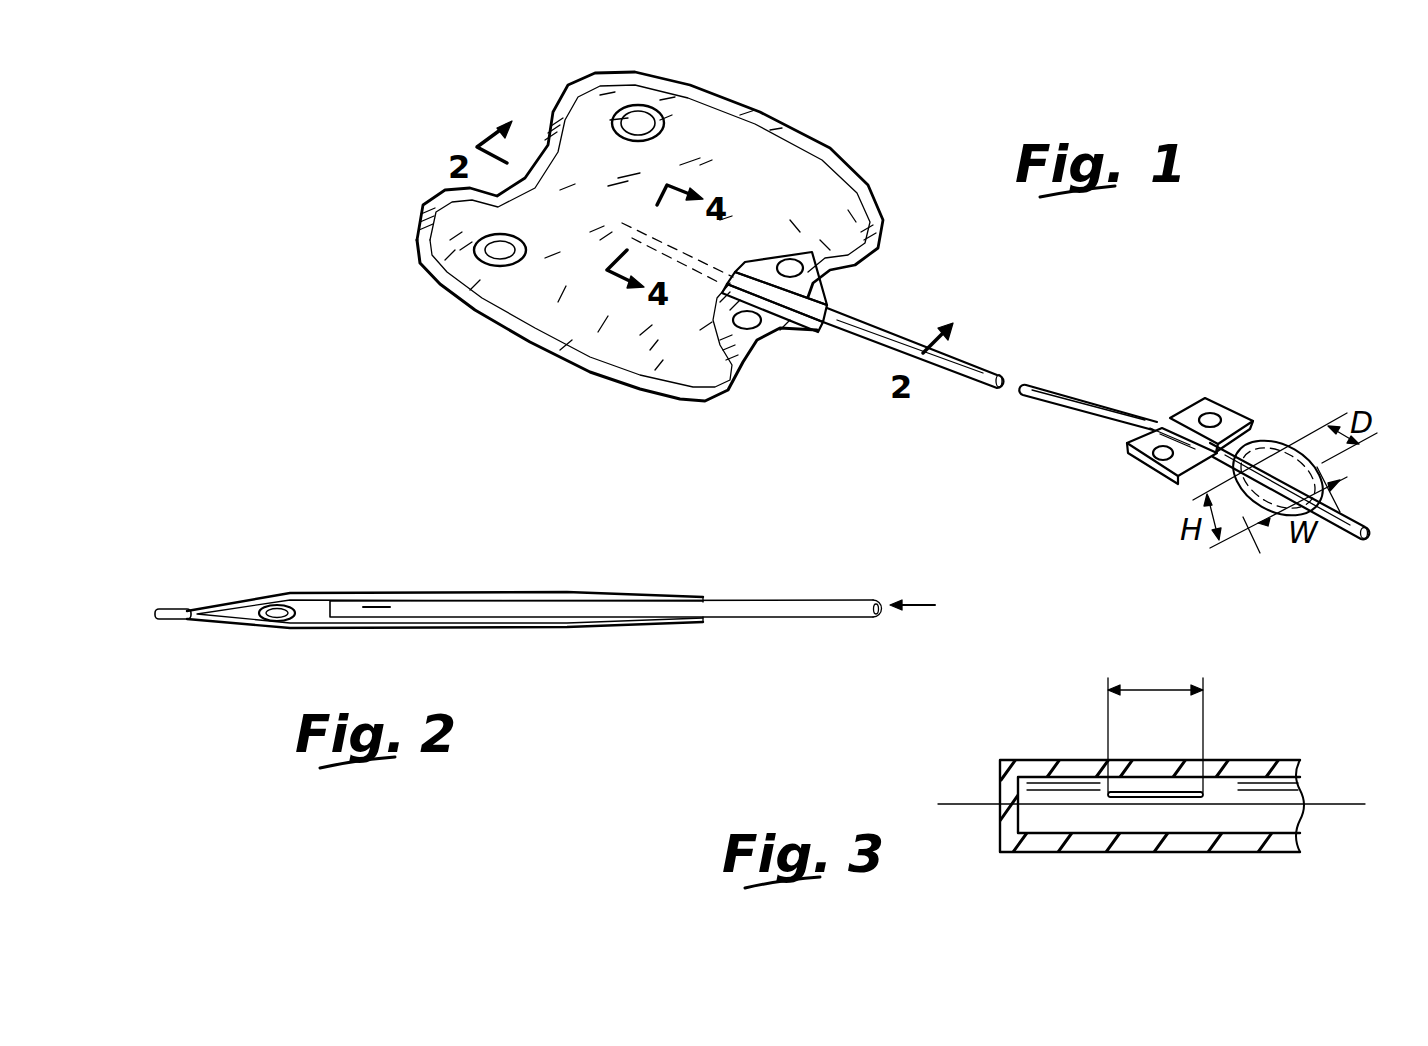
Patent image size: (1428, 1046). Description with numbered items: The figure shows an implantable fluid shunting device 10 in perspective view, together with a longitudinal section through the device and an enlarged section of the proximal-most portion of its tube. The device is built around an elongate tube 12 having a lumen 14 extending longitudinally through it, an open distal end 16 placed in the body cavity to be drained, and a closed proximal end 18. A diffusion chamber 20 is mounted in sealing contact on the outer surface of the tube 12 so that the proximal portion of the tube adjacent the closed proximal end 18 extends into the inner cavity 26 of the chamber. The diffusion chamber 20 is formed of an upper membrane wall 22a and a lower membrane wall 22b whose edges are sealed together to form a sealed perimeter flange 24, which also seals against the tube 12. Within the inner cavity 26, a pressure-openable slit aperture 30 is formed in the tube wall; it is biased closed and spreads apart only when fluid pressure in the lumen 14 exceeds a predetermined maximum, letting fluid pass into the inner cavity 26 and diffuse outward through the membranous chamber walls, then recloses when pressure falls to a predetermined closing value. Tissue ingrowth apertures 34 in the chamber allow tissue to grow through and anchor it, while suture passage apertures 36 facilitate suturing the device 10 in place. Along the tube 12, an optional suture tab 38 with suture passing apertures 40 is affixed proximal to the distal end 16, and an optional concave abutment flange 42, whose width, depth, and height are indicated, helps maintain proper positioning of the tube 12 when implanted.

In FIG. 1, the implantable fluid shunting device 10 is at (848, 125).
In FIG. 1, the elongate tube 12 is at (1085, 393).
In FIG. 1, the lumen 14 is at (1012, 372).
In FIG. 3, the lumen 14 is at (1250, 800).
In FIG. 1, the open distal end 16 is at (1412, 568).
In FIG. 1, the closed proximal end 18 is at (627, 212).
In FIG. 2, the closed proximal end 18 is at (322, 603).
In FIG. 3, the closed proximal end 18 is at (1000, 812).
In FIG. 1, the diffusion chamber 20 is at (833, 210).
In FIG. 2, the diffusion chamber 20 is at (224, 601).
In FIG. 2, the upper membrane wall 22a is at (580, 593).
In FIG. 2, the lower membrane wall 22b is at (548, 627).
In FIG. 1, the sealed perimeter flange 24 is at (632, 110).
In FIG. 2, the sealed perimeter flange 24 is at (172, 618).
In FIG. 2, the inner cavity 26 is at (432, 598).
In FIG. 1, the pressure-openable slit aperture 30 is at (627, 213).
In FIG. 2, the pressure-openable slit aperture 30 is at (373, 605).
In FIG. 3, the pressure-openable slit aperture 30 is at (1165, 790).
In FIG. 1, the tissue ingrowth apertures 34 is at (640, 125).
In FIG. 2, the tissue ingrowth apertures 34 is at (278, 610).
In FIG. 1, the suture passage apertures 36 is at (750, 316).
In FIG. 1, the suture tab 38 is at (1233, 403).
In FIG. 1, the suture passing apertures 40 is at (1208, 415).
In FIG. 1, the concave abutment flange 42 is at (1290, 447).